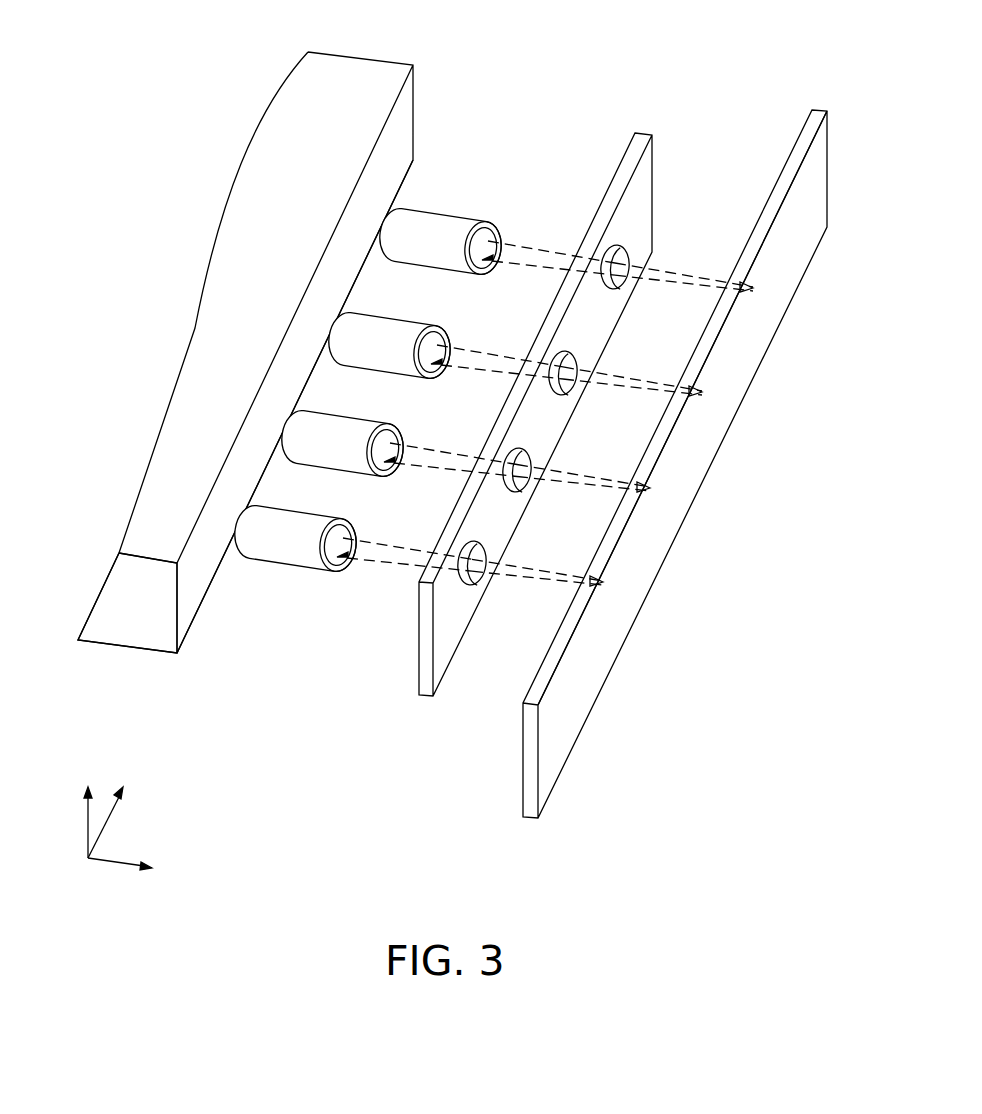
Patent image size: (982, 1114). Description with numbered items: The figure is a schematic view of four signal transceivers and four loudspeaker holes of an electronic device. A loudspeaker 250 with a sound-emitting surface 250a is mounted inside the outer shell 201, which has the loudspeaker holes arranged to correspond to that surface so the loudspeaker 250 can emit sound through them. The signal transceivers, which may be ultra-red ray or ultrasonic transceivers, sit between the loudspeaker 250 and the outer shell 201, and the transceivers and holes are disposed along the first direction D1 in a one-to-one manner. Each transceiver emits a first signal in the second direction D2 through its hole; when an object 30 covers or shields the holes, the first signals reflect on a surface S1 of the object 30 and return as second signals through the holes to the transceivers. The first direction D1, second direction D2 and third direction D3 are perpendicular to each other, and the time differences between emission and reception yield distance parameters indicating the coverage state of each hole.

The loudspeaker 250 is at (347, 78).
The sound-emitting surface 250a is at (190, 600).
The outer shell 201 is at (426, 692).
The object 30 is at (533, 812).
The surface S1 is at (792, 152).
The first direction D1 is at (119, 807).
The second direction D2 is at (136, 870).
The third direction D3 is at (92, 805).